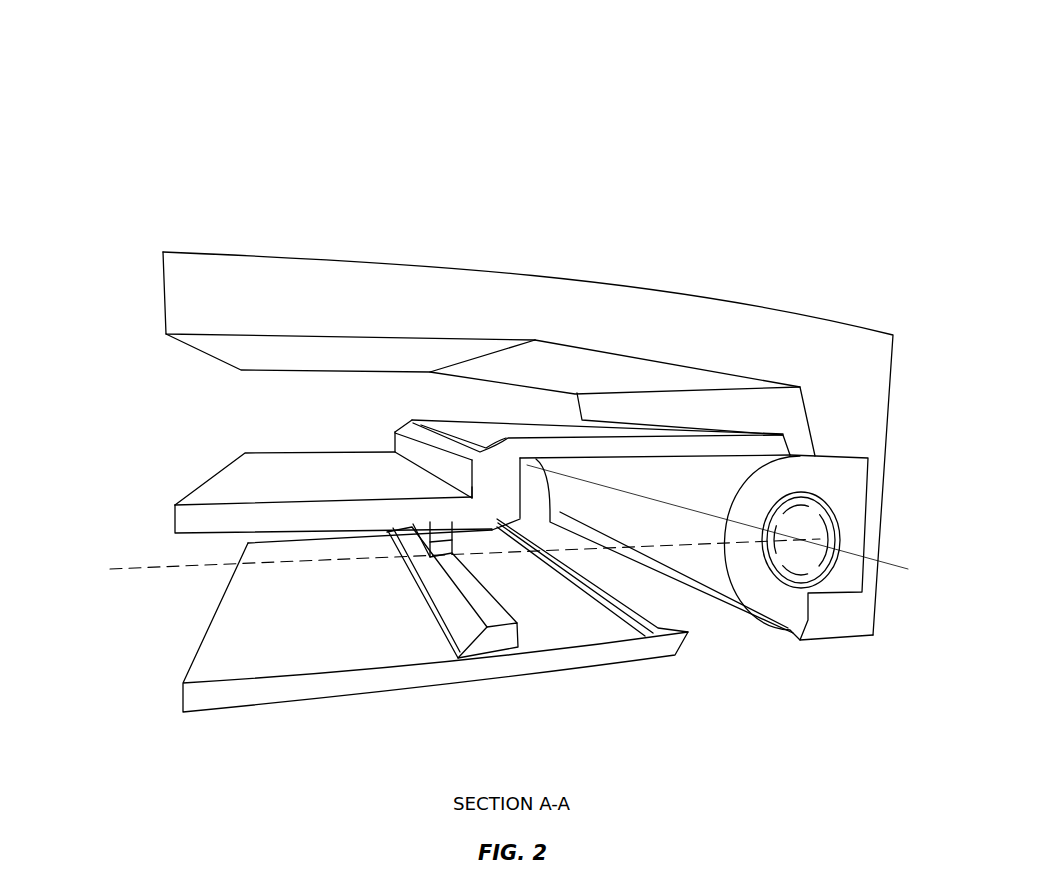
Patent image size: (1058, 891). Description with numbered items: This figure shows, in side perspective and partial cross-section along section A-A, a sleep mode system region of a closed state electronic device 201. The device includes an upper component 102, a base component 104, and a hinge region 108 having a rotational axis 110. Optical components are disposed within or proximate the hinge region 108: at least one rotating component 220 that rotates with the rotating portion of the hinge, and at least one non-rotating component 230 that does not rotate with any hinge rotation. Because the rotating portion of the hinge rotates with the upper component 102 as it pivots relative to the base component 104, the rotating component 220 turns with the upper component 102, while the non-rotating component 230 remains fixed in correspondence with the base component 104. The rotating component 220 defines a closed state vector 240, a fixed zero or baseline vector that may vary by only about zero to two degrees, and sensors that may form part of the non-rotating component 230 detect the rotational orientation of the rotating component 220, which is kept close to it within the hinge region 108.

The upper component 102 is at (413, 267).
The base component 104 is at (410, 690).
The hinge region 108 is at (792, 638).
The rotational axis 110 is at (906, 569).
The closed state electronic device 201 is at (752, 58).
The rotating component 220 is at (840, 560).
The non-rotating component 230 is at (823, 592).
The closed state vector 240 is at (118, 568).